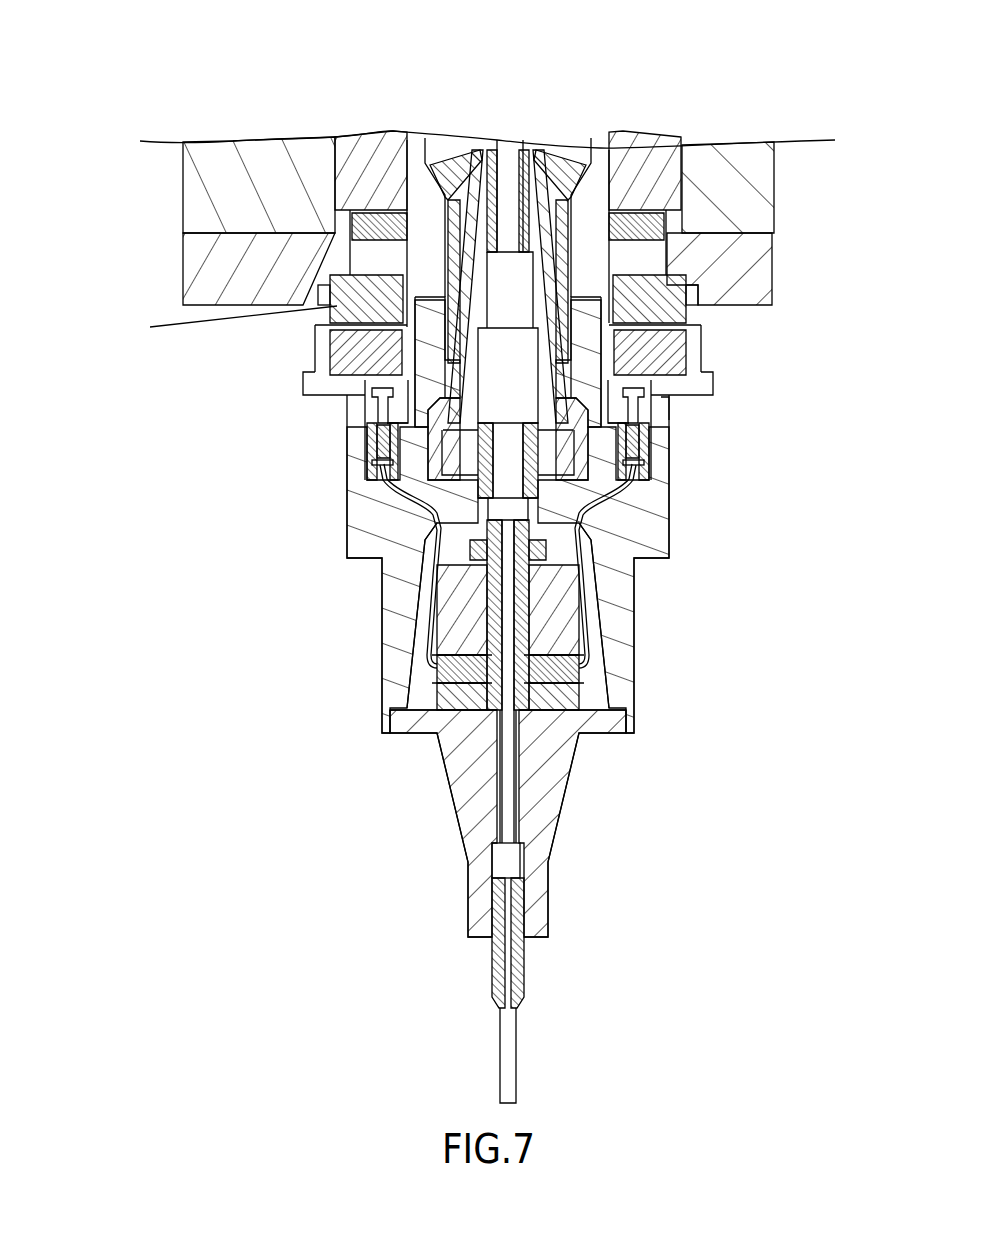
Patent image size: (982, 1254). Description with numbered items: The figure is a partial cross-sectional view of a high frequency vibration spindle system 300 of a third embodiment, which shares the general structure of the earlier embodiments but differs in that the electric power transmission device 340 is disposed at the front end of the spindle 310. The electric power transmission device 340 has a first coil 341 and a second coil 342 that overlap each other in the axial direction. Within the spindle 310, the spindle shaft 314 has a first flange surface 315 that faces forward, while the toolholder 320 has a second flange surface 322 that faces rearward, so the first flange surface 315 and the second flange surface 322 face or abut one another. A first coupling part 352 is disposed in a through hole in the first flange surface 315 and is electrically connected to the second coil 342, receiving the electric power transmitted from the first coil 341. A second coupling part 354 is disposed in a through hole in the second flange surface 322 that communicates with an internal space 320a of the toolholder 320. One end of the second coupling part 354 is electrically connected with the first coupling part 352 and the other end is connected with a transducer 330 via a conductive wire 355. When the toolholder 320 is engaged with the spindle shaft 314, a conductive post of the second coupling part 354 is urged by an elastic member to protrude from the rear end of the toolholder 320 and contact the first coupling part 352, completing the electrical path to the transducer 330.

The high frequency vibration spindle system 300 is at (221, 108).
The spindle 310 is at (180, 211).
The spindle shaft 314 is at (603, 148).
The first flange surface 315 is at (667, 418).
The toolholder 320 is at (569, 617).
The internal space 320a is at (600, 592).
The second flange surface 322 is at (665, 428).
The transducer 330 is at (438, 681).
The electric power transmission device 340 is at (369, 343).
The first coil 341 is at (330, 312).
The second coil 342 is at (330, 368).
The first coupling part 352 is at (375, 403).
The second coupling part 354 is at (375, 460).
The conductive wire 355 is at (430, 602).